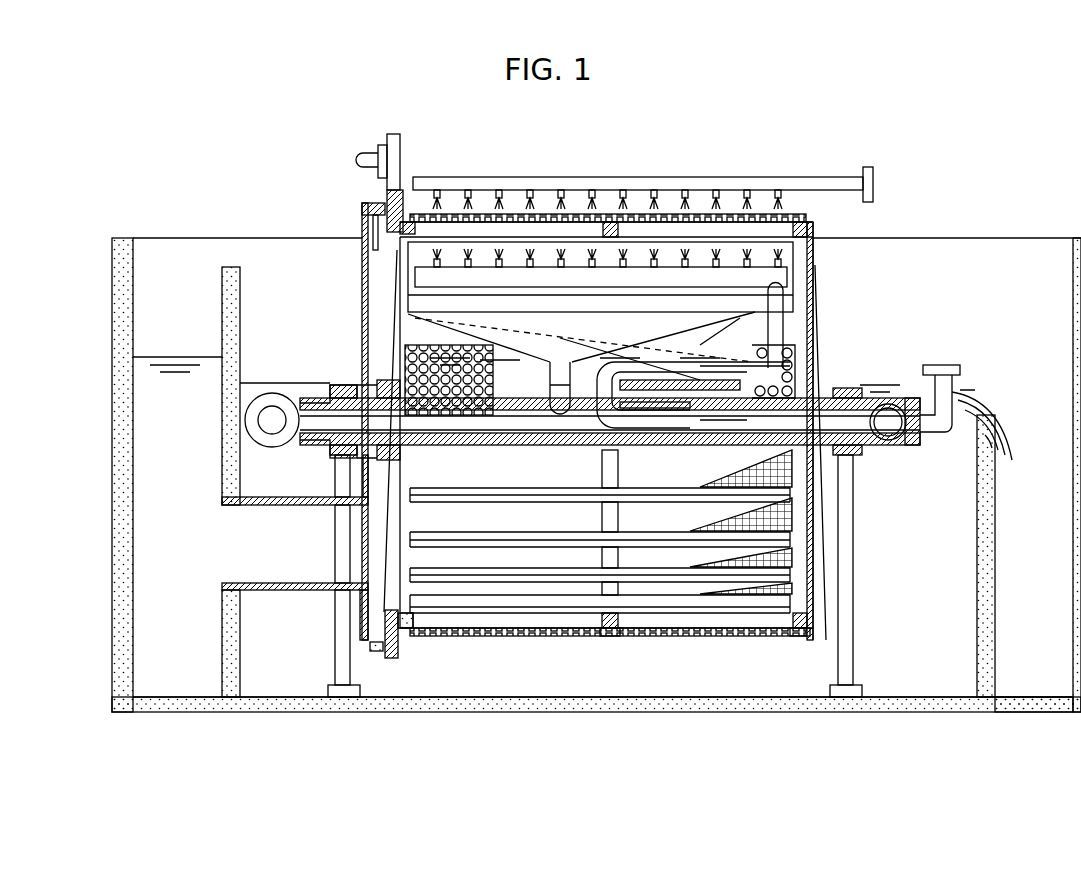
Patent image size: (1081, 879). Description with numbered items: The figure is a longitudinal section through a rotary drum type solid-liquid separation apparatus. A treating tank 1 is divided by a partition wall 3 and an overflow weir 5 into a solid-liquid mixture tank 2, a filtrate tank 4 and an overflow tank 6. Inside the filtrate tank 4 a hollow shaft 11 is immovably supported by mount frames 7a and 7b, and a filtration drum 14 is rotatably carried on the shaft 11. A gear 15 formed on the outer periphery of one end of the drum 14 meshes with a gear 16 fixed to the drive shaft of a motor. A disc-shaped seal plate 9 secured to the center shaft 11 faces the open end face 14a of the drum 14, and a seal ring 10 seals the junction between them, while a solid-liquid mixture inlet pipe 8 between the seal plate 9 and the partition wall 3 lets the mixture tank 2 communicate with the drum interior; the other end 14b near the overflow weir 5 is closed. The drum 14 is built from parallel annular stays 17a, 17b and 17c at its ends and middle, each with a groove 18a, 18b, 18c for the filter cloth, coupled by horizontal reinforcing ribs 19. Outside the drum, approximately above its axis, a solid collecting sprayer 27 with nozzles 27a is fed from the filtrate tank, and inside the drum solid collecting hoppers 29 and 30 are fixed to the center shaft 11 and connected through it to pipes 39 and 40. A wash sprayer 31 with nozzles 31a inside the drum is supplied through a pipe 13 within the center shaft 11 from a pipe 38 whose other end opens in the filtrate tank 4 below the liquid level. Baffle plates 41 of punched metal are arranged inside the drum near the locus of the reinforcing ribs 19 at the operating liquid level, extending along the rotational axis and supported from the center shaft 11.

The treating tank 1 is at (98, 416).
The solid-liquid mixture tank 2 is at (150, 490).
The partition wall 3 is at (222, 303).
The filtrate tank 4 is at (590, 700).
The overflow weir 5 is at (995, 532).
The overflow tank 6 is at (1015, 698).
The mount frame 7a is at (335, 615).
The mount frame 7b is at (855, 612).
The solid-liquid mixture inlet pipe 8 is at (232, 547).
The seal plate 9 is at (362, 330).
The seal ring 10 is at (378, 652).
The hollow shaft 11 is at (567, 430).
The pipe 13 is at (702, 447).
The filtration drum 14 is at (590, 637).
The end face 14a is at (368, 248).
The other end 14b is at (815, 262).
The gear 15 is at (391, 658).
The gear 16 is at (400, 142).
The annular stay 17a is at (415, 620).
The annular stay 17b is at (623, 628).
The annular stay 17c is at (810, 628).
The groove 18a is at (408, 636).
The groove 18b is at (608, 637).
The groove 18c is at (796, 637).
The reinforcing rib 19 is at (572, 492).
The solid collecting sprayer 27 is at (490, 177).
The nozzle 27a is at (722, 192).
The solid collecting hopper 29 is at (765, 345).
The solid collecting hopper 30 is at (783, 322).
The wash sprayer 31 is at (552, 265).
The nozzle 31a is at (645, 265).
The pipe 38 is at (955, 372).
The pipe 39 is at (885, 450).
The pipe 40 is at (278, 432).
The baffle plate 41 is at (415, 355).